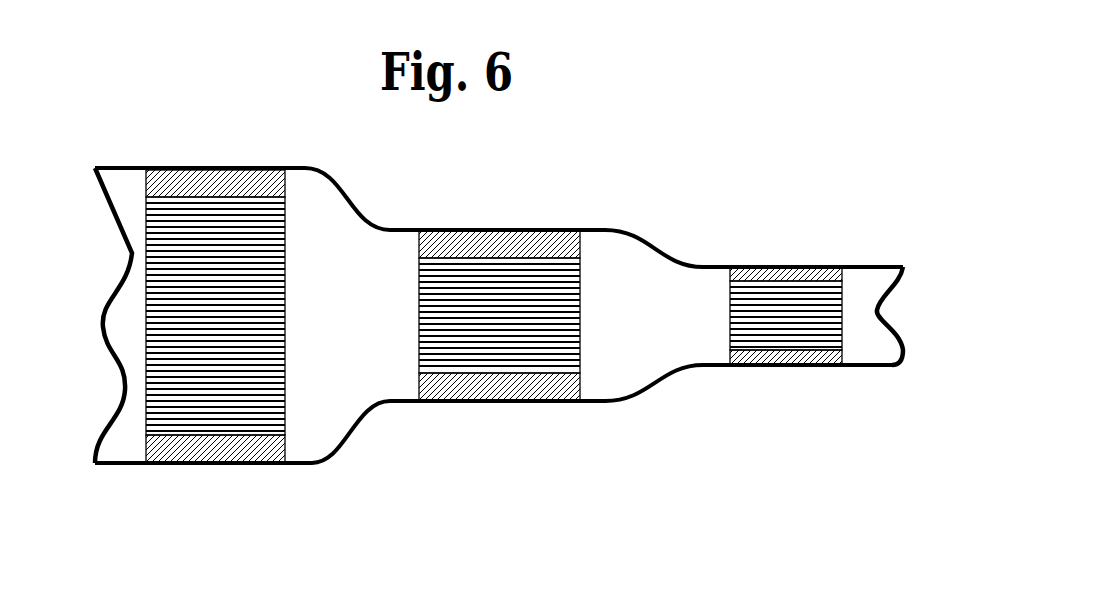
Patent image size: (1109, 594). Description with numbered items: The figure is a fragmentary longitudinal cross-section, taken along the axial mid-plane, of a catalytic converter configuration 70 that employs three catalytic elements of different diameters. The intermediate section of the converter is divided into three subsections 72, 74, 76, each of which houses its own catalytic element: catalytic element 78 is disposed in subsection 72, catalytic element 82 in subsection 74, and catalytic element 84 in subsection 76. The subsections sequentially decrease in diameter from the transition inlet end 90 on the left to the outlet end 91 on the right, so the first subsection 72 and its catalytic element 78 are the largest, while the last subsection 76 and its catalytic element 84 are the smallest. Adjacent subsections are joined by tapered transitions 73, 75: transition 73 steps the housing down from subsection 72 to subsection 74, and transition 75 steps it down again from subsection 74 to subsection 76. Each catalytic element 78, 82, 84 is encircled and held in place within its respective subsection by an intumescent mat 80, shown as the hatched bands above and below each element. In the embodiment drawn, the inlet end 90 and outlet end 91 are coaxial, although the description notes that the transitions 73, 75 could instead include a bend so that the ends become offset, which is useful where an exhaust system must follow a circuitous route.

The configuration 70 is at (666, 182).
The subsection 72 is at (225, 168).
The transition 73 is at (351, 433).
The subsection 74 is at (480, 228).
The transition 75 is at (668, 381).
The subsection 76 is at (772, 265).
The catalytic element 78 is at (233, 410).
The intumescent mat 80 is at (168, 463).
The catalytic element 82 is at (530, 348).
The catalytic element 84 is at (811, 333).
The transition inlet end 90 is at (132, 264).
The outlet end 91 is at (890, 302).